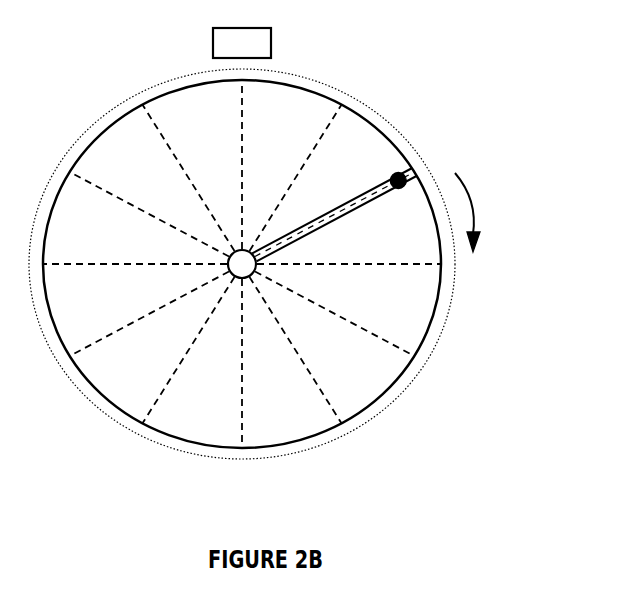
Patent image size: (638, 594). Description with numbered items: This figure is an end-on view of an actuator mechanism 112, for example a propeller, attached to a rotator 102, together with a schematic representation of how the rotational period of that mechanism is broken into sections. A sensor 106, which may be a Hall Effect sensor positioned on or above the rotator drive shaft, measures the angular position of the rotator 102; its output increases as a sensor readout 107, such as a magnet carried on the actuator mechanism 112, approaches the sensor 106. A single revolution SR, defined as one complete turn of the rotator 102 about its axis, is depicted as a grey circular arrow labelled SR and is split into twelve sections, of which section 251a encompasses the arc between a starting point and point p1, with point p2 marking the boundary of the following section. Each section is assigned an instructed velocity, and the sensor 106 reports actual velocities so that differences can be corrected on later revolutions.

The rotator 102 is at (227, 272).
The sensor 106 is at (213, 43).
The sensor readout 107 is at (405, 173).
The actuator mechanism 112 is at (368, 186).
The section 251a is at (479, 204).
The single revolution SR is at (103, 115).
The point p1 is at (430, 170).
The point p2 is at (453, 270).